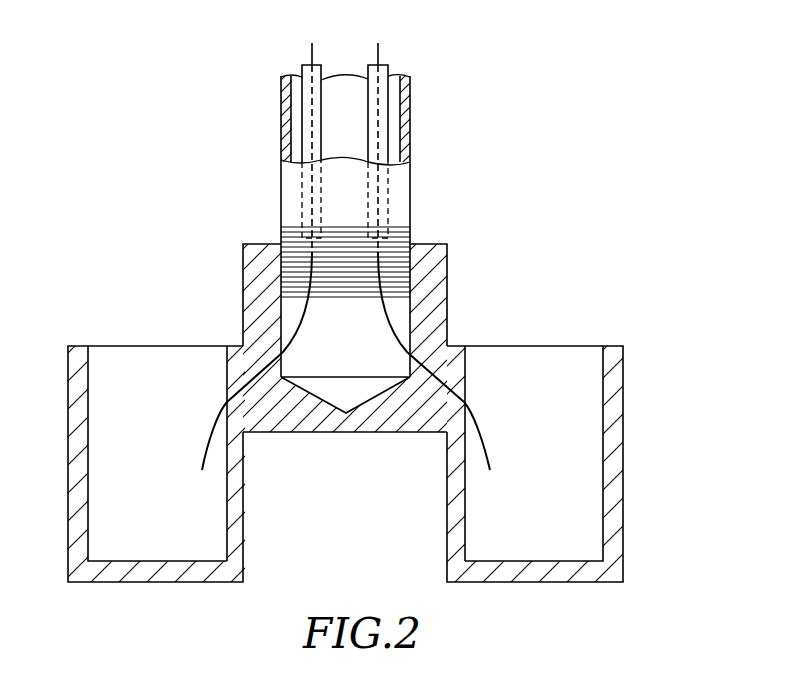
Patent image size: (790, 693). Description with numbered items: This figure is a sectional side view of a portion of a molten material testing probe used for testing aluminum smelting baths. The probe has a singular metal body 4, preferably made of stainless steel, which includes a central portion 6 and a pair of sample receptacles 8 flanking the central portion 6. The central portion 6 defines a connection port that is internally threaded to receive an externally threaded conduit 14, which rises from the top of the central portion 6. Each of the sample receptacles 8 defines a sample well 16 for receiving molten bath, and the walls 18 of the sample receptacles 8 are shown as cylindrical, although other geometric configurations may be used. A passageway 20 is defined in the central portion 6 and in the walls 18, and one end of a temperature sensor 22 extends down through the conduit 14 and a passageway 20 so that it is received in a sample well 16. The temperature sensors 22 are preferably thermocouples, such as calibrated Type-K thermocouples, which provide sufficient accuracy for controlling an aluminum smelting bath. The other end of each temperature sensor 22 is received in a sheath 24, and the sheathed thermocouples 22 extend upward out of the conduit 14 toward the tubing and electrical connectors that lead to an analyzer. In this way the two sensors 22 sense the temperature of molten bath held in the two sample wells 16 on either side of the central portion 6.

The metal body 4 is at (637, 406).
The central portion 6 is at (330, 434).
The sample receptacles 8 is at (68, 483).
The conduit 14 is at (412, 106).
The sample well 16 is at (104, 360).
The walls 18 is at (225, 512).
The passageway 20 is at (225, 400).
The temperature sensor 22 is at (205, 446).
The sheath 24 is at (300, 97).